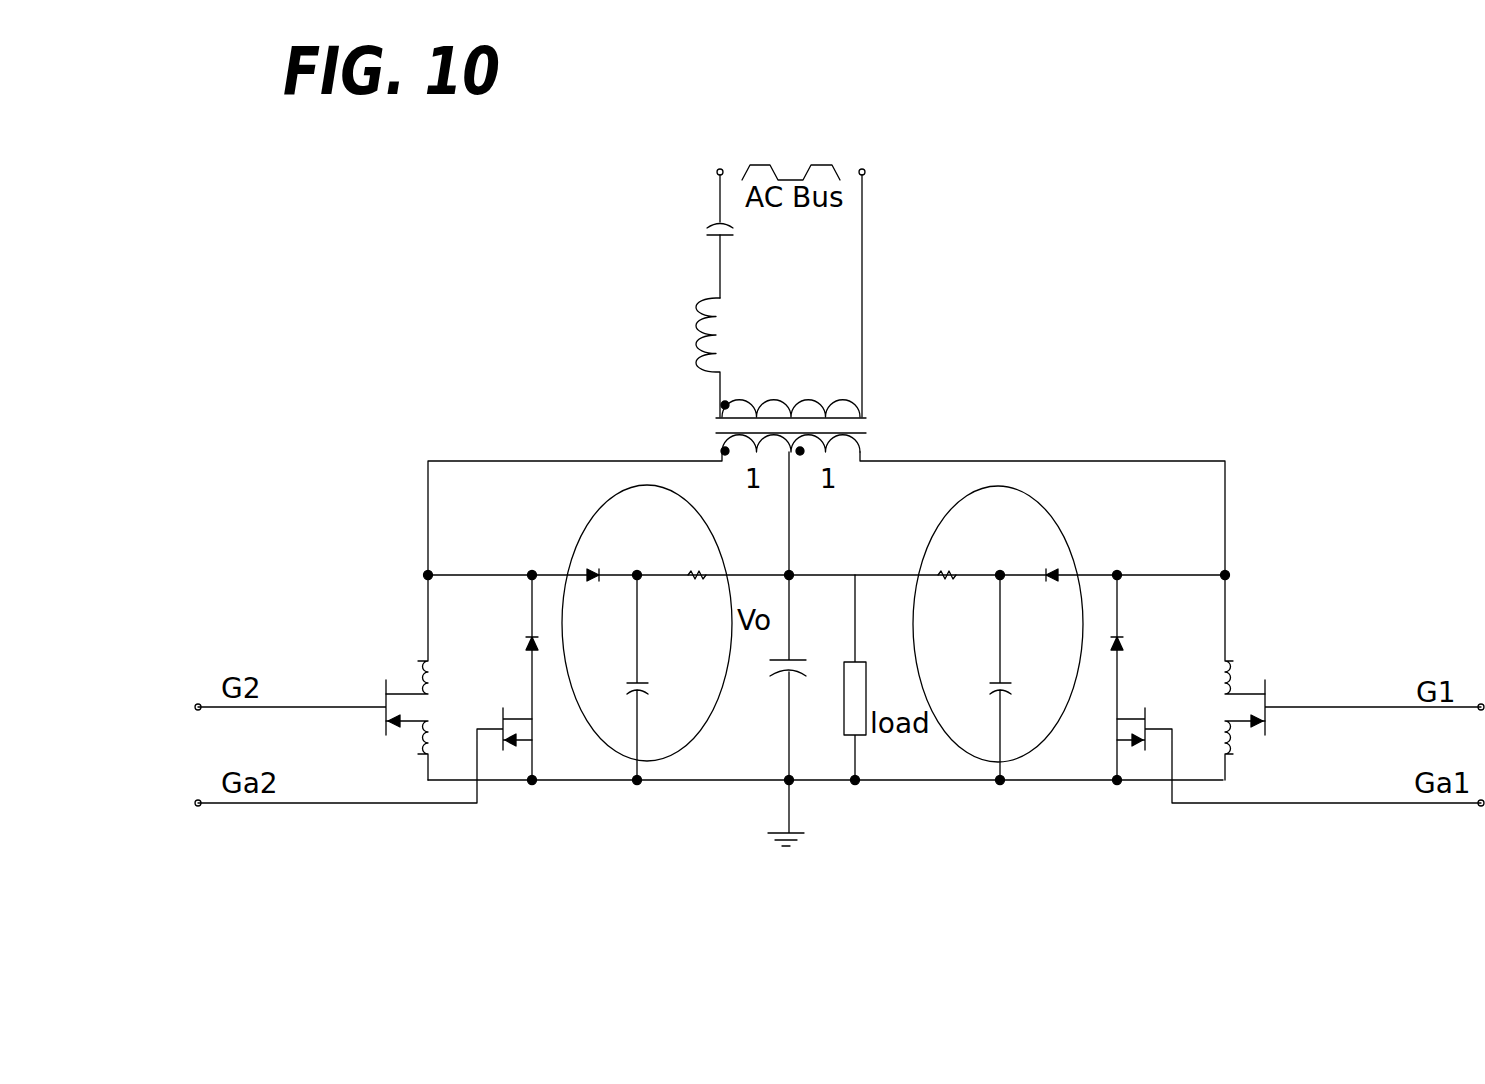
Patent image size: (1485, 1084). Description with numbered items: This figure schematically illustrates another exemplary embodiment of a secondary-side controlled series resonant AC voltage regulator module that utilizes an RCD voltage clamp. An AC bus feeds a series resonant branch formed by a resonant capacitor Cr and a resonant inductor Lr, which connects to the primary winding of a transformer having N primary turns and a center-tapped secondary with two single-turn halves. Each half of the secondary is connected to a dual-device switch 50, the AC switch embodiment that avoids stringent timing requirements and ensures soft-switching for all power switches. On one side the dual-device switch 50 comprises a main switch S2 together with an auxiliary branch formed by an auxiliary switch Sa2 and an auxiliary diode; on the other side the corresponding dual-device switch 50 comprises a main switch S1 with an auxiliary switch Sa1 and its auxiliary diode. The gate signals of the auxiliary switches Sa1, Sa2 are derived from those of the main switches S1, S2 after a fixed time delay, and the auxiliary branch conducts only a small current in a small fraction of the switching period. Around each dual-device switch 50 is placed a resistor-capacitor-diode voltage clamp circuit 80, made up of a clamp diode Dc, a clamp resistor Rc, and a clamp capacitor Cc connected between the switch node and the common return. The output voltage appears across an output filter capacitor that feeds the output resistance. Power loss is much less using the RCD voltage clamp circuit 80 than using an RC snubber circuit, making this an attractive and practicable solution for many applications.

The RCD voltage clamp circuit 80 is at (820, 625).
The dual-device switch 50 is at (839, 689).
The resonant capacitor Cr is at (699, 236).
The resonant inductor Lr is at (687, 357).
The transformer primary winding N is at (791, 400).
The clamp diode Dc is at (821, 559).
The clamp resistor Rc is at (827, 558).
The clamp capacitor Cc is at (819, 677).
The main switch S1 is at (1353, 677).
The main switch S2 is at (313, 677).
The auxiliary switch Sa1 is at (1271, 755).
The auxiliary switch Sa2 is at (393, 755).